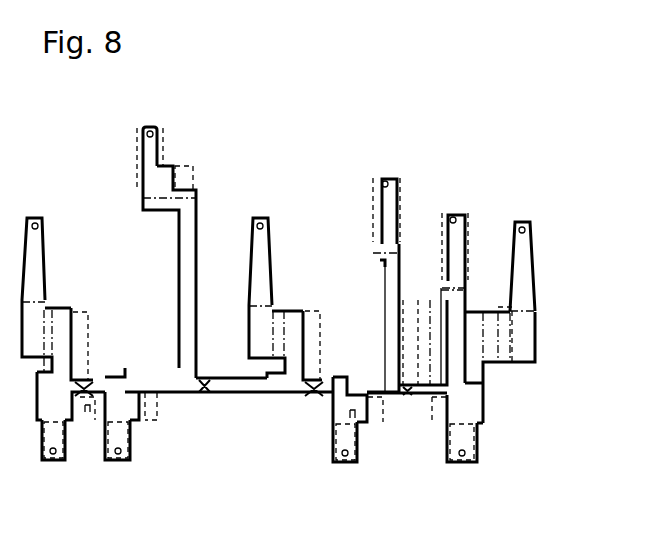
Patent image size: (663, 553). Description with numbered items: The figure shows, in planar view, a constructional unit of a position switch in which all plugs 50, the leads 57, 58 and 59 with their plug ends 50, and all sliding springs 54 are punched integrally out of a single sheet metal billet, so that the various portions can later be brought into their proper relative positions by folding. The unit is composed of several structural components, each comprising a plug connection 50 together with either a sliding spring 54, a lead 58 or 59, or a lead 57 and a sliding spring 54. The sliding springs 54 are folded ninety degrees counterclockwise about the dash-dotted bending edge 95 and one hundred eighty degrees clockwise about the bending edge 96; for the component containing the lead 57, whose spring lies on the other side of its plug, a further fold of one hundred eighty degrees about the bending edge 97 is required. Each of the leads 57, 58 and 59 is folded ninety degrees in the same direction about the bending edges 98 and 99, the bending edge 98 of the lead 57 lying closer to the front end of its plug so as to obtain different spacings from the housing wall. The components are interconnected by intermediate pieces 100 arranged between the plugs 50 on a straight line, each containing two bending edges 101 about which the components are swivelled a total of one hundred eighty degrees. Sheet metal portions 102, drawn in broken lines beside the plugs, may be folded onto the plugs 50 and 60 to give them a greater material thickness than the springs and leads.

The plug 50 is at (55, 460).
The sliding spring 54 is at (35, 255).
The lead 57 is at (448, 336).
The lead 58 is at (392, 291).
The lead 59 is at (188, 272).
The plug connection 60 is at (154, 133).
The bending edge 95 is at (75, 318).
The bending edge 96 is at (45, 318).
The bending edge 97 is at (485, 352).
The bending edge 98 is at (212, 356).
The bending edge 99 is at (180, 200).
The intermediate piece 100 is at (95, 380).
The bending edge 101 is at (206, 393).
The sheet metal portion 102 is at (143, 163).